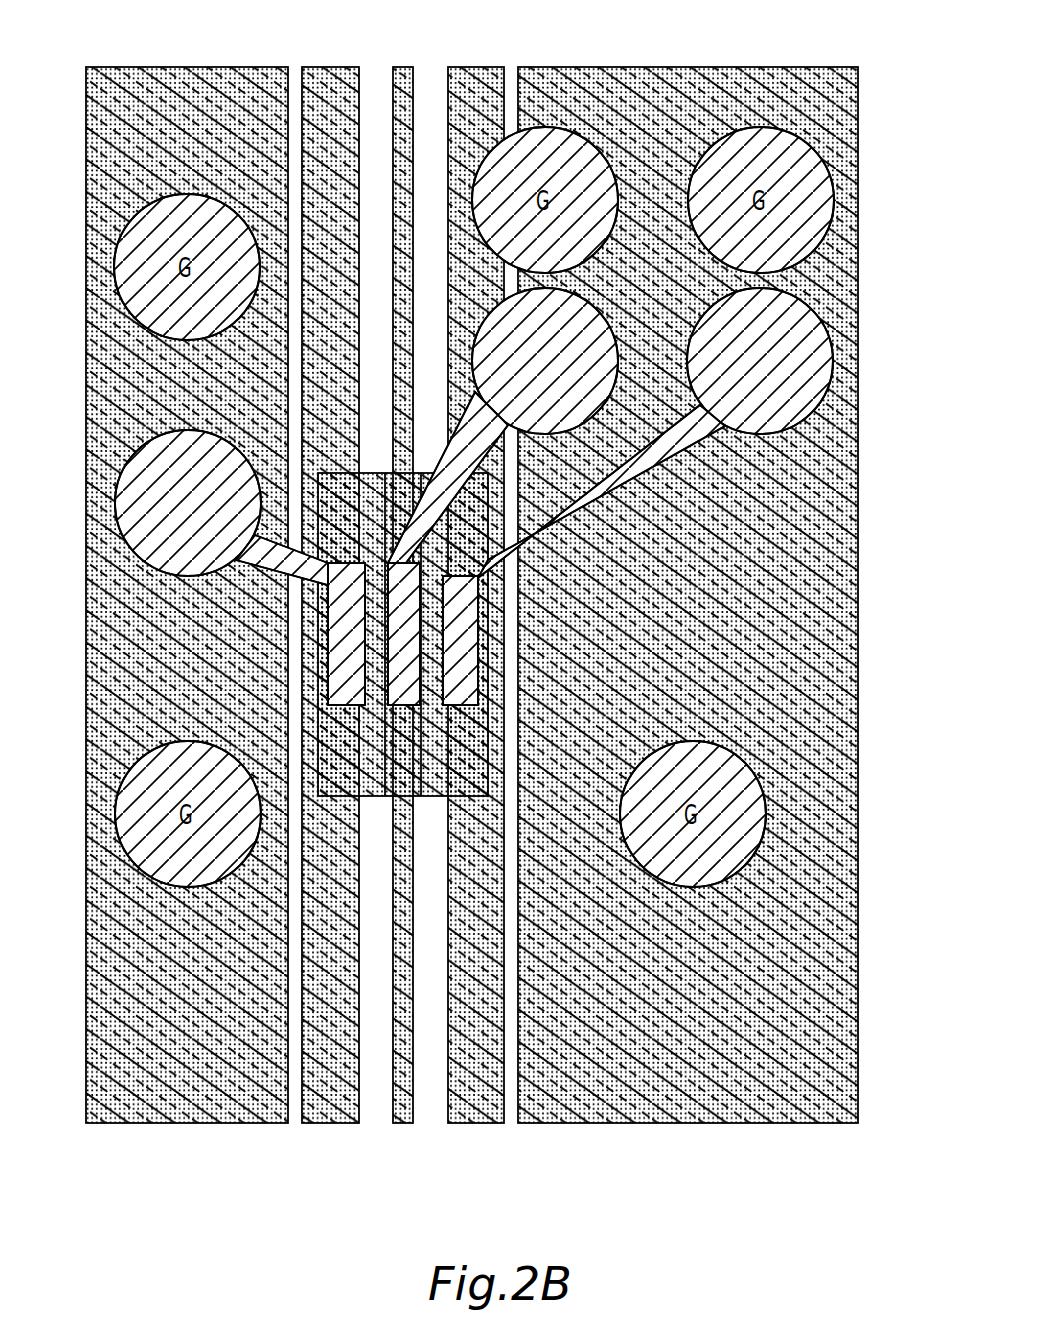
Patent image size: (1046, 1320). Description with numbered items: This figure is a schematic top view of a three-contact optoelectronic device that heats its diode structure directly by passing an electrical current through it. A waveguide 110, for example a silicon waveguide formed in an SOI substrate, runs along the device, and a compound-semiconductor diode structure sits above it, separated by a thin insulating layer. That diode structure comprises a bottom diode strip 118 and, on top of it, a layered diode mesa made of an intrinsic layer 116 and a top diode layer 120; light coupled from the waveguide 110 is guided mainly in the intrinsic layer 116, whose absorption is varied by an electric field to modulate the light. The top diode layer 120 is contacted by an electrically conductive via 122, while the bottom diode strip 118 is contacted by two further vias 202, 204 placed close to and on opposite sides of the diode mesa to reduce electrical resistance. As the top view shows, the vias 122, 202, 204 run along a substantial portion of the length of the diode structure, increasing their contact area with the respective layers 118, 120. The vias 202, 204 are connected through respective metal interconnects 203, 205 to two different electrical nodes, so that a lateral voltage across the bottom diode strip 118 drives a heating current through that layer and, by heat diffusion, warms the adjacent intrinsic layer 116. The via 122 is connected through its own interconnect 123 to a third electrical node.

The waveguide 110 is at (442, 617).
The intrinsic layer 116 is at (489, 647).
The bottom diode strip 118 is at (353, 790).
The top diode layer 120 is at (397, 790).
The via 122 is at (390, 627).
The interconnect 123 is at (560, 322).
The via 202 is at (332, 672).
The interconnect 203 is at (140, 495).
The via 204 is at (463, 632).
The interconnect 205 is at (807, 357).